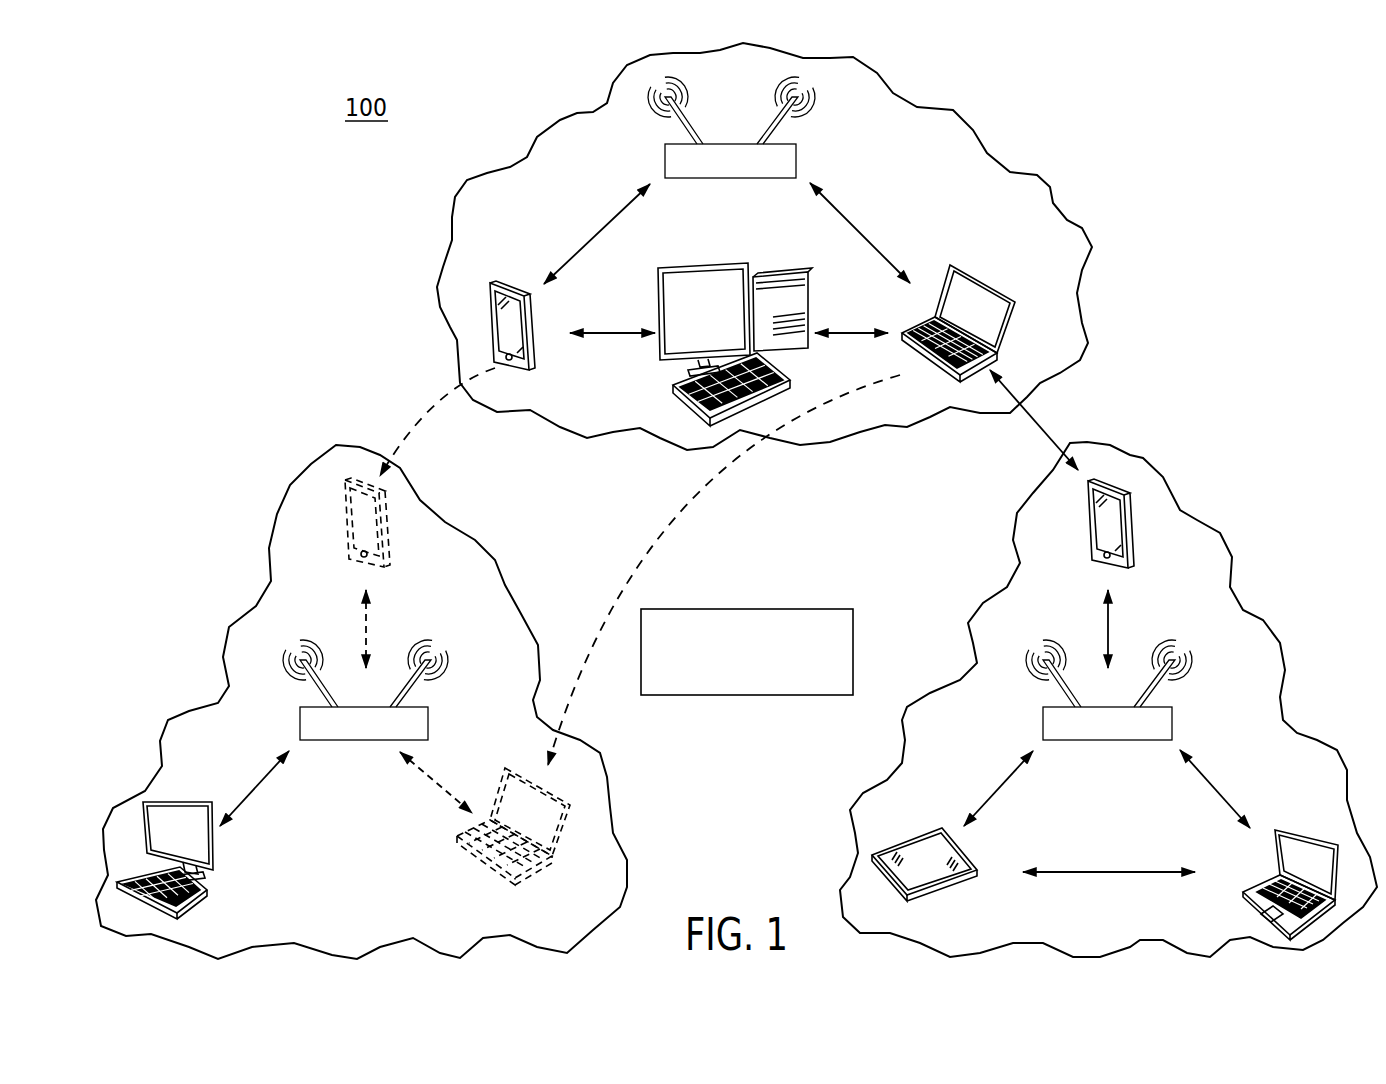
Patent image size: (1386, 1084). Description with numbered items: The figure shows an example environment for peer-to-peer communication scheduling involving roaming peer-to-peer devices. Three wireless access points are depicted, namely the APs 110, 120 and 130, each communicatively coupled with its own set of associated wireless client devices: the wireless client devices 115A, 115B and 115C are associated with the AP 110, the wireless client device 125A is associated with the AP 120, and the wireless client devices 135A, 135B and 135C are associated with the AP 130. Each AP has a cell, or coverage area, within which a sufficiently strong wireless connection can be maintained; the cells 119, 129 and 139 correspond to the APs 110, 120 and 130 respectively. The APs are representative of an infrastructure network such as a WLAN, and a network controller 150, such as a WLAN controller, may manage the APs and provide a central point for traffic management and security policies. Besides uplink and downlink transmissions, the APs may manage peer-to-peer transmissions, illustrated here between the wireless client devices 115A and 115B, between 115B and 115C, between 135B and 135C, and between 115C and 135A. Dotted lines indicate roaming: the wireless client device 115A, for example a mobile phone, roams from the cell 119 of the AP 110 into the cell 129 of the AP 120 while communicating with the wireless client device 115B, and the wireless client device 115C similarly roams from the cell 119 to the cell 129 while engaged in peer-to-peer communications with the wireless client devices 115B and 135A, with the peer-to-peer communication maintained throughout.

The access point 110 is at (796, 159).
The wireless client device 115A is at (506, 282).
The wireless client device 115B is at (768, 272).
The wireless client device 115C is at (1000, 298).
The cell 119 is at (1012, 148).
The access point 120 is at (428, 716).
The wireless client device 125A is at (207, 900).
The cell 129 is at (510, 607).
The access point 130 is at (1172, 723).
The wireless client device 135A is at (1134, 525).
The wireless client device 135B is at (920, 892).
The wireless client device 135C is at (1245, 905).
The cell 139 is at (1185, 515).
The network controller 150 is at (816, 609).